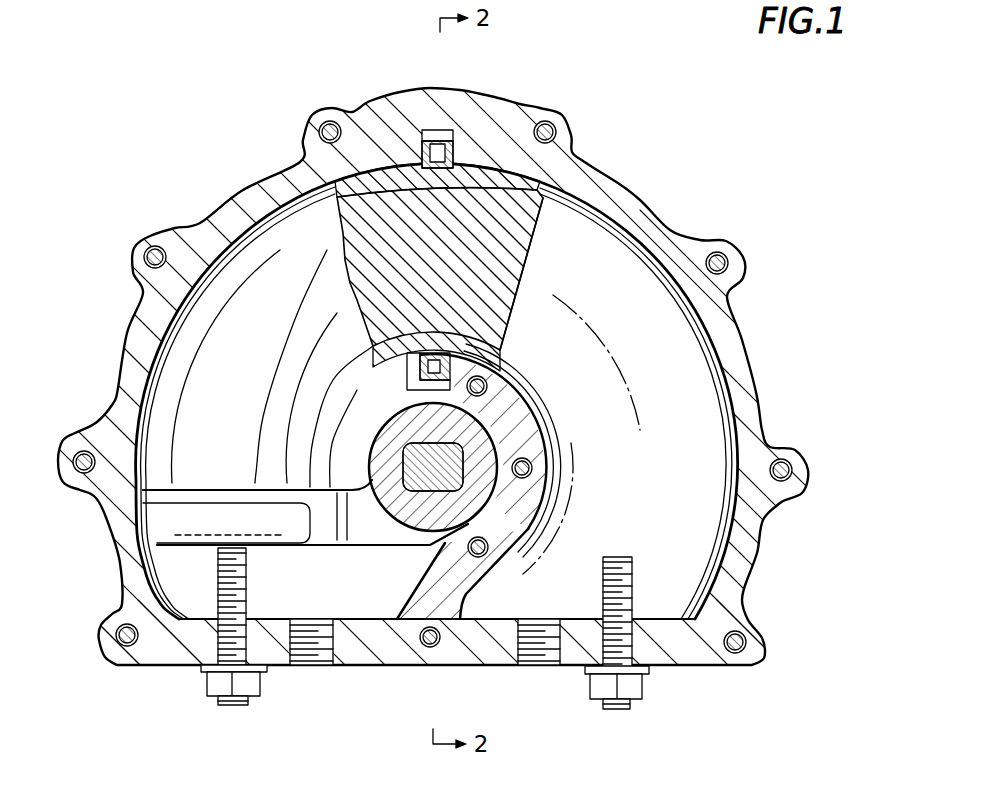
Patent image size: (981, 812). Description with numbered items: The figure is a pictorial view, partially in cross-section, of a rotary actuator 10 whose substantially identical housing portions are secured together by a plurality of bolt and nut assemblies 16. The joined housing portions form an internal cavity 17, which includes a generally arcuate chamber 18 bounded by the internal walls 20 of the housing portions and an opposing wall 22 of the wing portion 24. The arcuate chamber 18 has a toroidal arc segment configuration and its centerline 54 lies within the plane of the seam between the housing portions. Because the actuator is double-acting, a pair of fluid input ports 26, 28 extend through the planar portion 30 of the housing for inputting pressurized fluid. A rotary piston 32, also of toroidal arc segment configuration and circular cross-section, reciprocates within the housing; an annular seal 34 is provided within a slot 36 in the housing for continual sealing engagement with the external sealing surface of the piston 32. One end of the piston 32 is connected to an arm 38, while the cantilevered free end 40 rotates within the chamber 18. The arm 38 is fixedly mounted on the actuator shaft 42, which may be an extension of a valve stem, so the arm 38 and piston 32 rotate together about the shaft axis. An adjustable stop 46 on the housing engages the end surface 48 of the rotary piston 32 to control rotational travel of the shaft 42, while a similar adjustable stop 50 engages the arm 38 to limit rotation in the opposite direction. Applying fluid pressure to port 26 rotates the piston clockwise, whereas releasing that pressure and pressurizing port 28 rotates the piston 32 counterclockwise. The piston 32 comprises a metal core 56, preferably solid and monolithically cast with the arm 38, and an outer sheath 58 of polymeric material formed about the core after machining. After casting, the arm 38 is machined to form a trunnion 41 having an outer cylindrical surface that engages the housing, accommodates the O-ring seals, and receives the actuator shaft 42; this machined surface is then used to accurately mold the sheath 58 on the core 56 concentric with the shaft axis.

The rotary actuator 10 is at (770, 285).
The bolt and nut assemblies 16 is at (146, 255).
The internal cavity 17 is at (276, 594).
The arcuate chamber 18 is at (638, 506).
The internal walls 20 is at (728, 432).
The opposing wall 22 is at (543, 437).
The wing portion 24 is at (503, 537).
The fluid input port 26 is at (322, 652).
The fluid input port 28 is at (542, 660).
The planar portion 30 is at (405, 655).
The rotary piston 32 is at (170, 380).
The annular seal 34 is at (453, 150).
The slot 36 is at (443, 135).
The arm 38 is at (333, 535).
The free end 40 is at (508, 222).
The trunnion 41 is at (380, 445).
The actuator shaft 42 is at (460, 450).
The adjustable stop 46 is at (632, 688).
The end surface 48 is at (521, 263).
The adjustable stop 50 is at (218, 685).
The centerline 54 is at (640, 405).
The metal core 56 is at (298, 163).
The sheath 58 is at (376, 182).